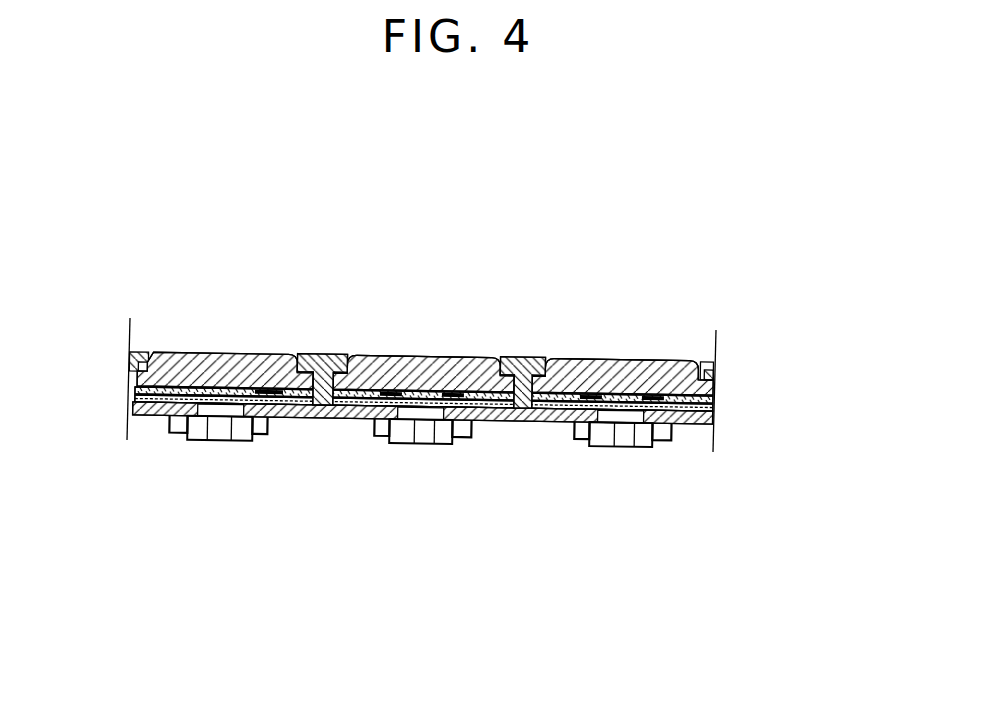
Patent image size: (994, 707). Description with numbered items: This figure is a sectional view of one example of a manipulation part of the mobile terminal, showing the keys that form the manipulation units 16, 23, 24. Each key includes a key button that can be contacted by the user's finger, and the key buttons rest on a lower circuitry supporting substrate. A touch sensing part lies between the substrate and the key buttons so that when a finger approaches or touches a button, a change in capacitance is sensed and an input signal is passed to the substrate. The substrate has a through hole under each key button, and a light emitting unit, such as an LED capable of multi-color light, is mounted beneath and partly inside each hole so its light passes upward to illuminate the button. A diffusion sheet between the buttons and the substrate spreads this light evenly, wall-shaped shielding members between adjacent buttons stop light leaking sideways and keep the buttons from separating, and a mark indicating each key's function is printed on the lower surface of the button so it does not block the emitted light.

The manipulation unit 16 is at (433, 365).
The manipulation unit 23 is at (433, 365).
The manipulation unit 24 is at (572, 274).